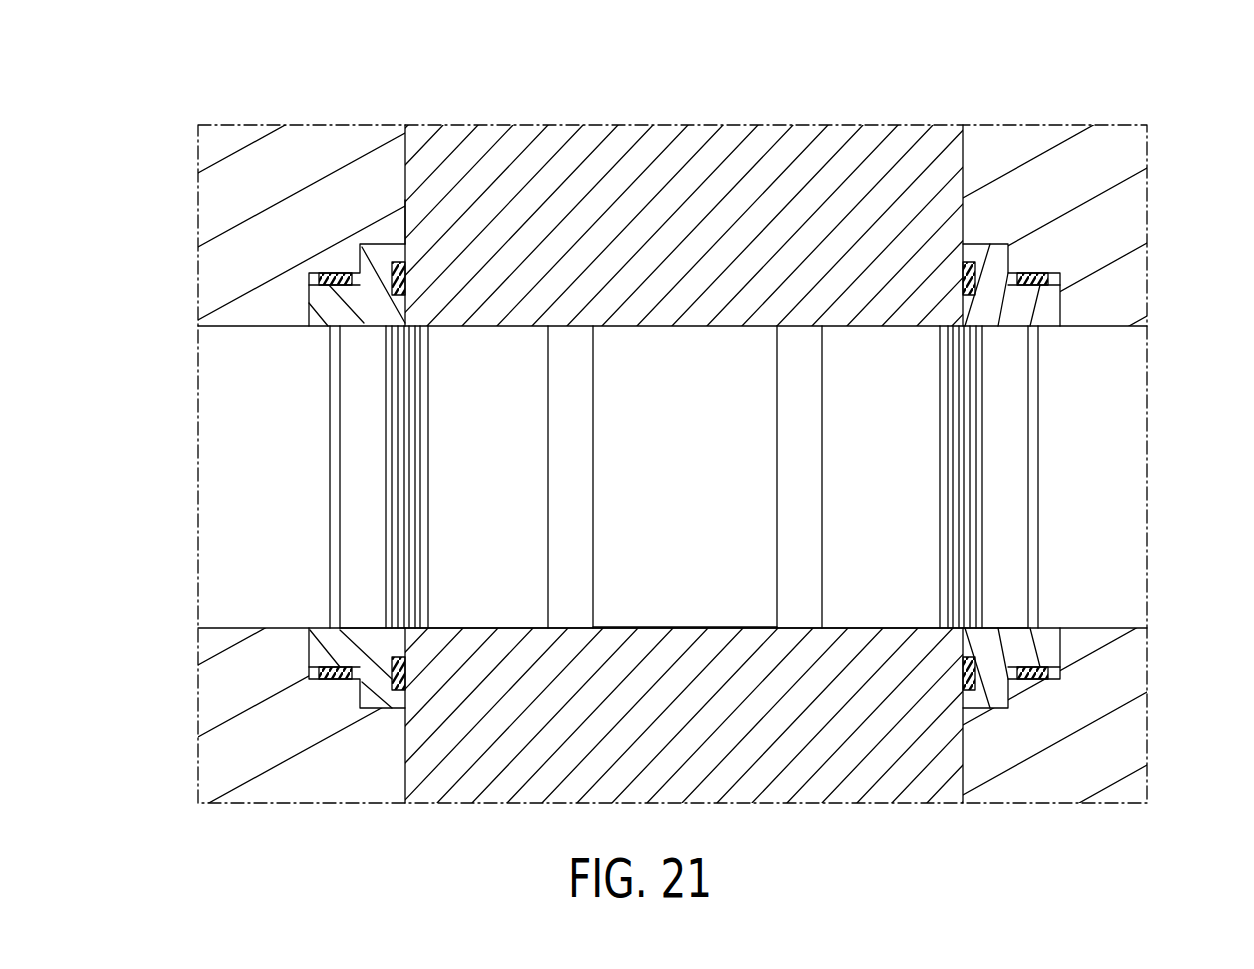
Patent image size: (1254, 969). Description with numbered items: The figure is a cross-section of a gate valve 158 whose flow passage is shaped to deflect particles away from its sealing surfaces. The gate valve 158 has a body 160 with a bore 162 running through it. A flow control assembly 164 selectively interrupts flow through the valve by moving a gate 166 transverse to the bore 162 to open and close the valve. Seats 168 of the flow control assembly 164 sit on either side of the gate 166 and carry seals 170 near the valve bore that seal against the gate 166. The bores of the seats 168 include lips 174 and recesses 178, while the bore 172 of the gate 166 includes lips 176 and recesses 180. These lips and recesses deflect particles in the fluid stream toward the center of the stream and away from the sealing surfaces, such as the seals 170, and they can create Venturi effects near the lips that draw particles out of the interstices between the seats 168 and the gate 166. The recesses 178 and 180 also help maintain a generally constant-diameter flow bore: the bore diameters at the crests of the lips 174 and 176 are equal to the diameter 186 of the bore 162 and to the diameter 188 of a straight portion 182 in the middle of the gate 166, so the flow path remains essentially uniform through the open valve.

The gate valve 158 is at (230, 100).
The body 160 is at (217, 290).
The bore 162 is at (280, 330).
The flow control assembly 164 is at (400, 214).
The gate 166 is at (657, 133).
The seats 168 is at (318, 298).
The seals 170 is at (402, 262).
The bore of the gate 172 is at (798, 627).
The lips 174 is at (403, 330).
The lips 176 is at (406, 328).
The recesses 178 is at (359, 326).
The recesses 180 is at (507, 326).
The straight portion 182 is at (614, 627).
The diameter of the bore 186 is at (291, 328).
The diameter of the straight portion 188 is at (688, 328).